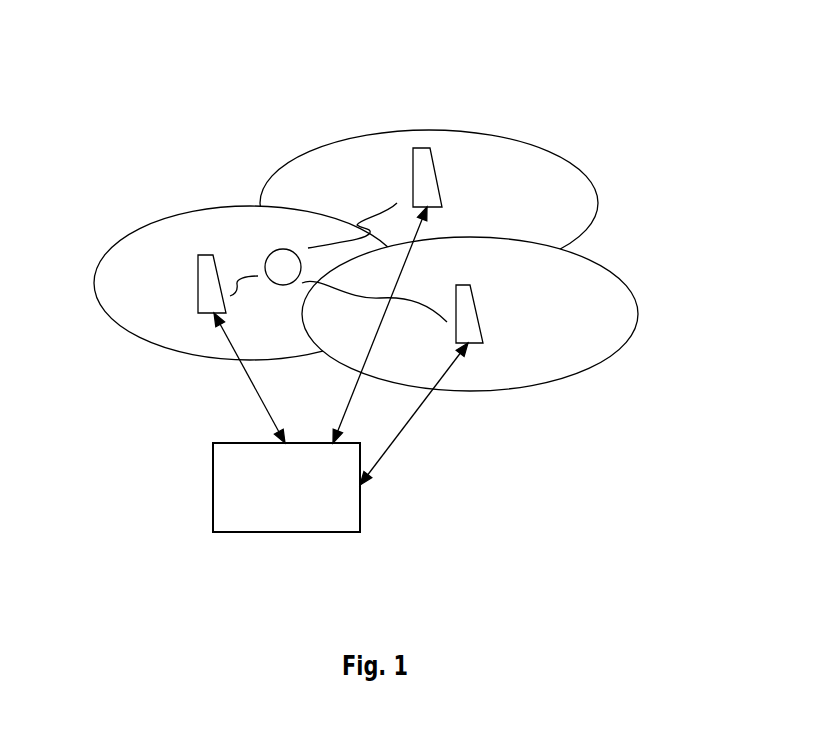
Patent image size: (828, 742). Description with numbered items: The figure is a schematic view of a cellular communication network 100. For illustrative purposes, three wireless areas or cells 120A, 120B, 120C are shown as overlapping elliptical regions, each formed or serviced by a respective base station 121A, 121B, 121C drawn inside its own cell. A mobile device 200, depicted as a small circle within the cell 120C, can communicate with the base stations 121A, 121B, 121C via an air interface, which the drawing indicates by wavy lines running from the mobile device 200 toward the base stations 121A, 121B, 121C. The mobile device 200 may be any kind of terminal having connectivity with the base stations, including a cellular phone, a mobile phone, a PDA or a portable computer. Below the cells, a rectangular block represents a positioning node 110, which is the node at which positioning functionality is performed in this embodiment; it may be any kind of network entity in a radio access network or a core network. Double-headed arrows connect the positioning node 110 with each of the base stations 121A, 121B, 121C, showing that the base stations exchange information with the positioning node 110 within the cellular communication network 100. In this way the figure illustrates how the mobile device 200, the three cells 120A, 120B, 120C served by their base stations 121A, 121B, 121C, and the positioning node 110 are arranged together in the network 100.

The cellular communication network 100 is at (527, 522).
The positioning node 110 is at (286, 508).
The wireless area or cell 120A is at (505, 138).
The wireless area or cell 120B is at (533, 385).
The wireless area or cell 120C is at (182, 216).
The base station 121A is at (455, 177).
The base station 121B is at (498, 314).
The base station 121C is at (174, 284).
The mobile device 200 is at (338, 262).